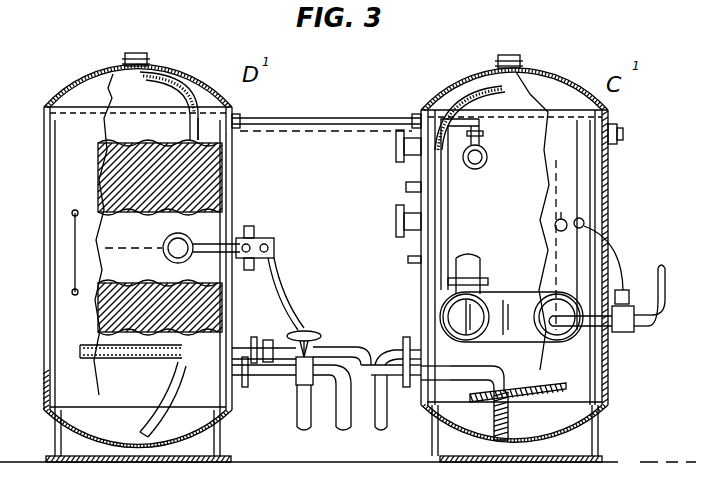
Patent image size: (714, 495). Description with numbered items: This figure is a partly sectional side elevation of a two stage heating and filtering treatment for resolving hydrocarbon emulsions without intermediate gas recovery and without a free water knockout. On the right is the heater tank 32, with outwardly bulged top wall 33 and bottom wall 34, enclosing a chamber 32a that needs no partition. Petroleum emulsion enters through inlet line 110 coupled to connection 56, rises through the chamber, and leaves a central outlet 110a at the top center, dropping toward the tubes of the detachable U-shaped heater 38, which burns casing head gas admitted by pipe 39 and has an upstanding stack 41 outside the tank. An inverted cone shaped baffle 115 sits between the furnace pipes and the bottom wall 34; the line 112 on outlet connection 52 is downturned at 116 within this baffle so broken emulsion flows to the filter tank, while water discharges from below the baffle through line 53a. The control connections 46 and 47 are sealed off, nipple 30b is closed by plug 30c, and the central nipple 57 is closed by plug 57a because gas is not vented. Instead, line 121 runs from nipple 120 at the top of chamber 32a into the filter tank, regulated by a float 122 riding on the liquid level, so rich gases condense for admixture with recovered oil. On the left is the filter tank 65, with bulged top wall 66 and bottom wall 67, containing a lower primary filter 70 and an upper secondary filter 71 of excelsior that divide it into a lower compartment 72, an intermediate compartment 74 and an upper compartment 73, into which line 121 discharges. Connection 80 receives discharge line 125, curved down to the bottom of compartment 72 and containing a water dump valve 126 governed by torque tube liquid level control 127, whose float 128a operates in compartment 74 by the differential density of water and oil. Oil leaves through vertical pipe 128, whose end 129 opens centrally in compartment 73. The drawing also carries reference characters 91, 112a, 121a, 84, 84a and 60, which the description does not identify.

The top wall 66 is at (108, 80).
The vent nozzle 91 is at (127, 58).
The upper compartment 73 is at (135, 112).
The end of discharge pipe 129 is at (160, 90).
The vertical pipe 128 is at (192, 124).
The upper secondary filter 71 is at (98, 163).
The lower primary filter 70 is at (97, 312).
The tank 65 is at (46, 235).
The intermediate compartment 74 is at (122, 236).
The float 128a is at (162, 254).
The overflow pipe 112a is at (130, 360).
The lower compartment 72 is at (50, 415).
The bottom wall 67 is at (88, 445).
The line 121 is at (312, 118).
The pipe flange 121a is at (238, 116).
The nipple 120 is at (415, 114).
The torque tube liquid level control 127 is at (276, 244).
The valve body 84 is at (247, 238).
The pipe flange 84a is at (246, 347).
The discharge line 125 is at (286, 382).
The connection 80 is at (262, 384).
The water dump valve 126 is at (332, 397).
The line 112 is at (328, 347).
The inlet line 110 is at (392, 350).
The connection 56 is at (407, 337).
The outlet connection 52 is at (421, 382).
The top wall 33 is at (556, 88).
The central nipple 57 is at (522, 66).
The plug 57a is at (516, 56).
The central outlet 110a is at (480, 118).
The float 122 is at (488, 158).
The nipple 30b is at (619, 130).
The plug 30c is at (624, 136).
The tubular flanged control connection 46 is at (396, 148).
The fitting 60 is at (406, 187).
The tubular flanged control connection 47 is at (396, 222).
The chamber 32a is at (408, 259).
The tank 32 is at (588, 212).
The upstanding stack 41 is at (476, 256).
The U-shaped heater 38 is at (498, 306).
The pipe 39 is at (650, 328).
The downturned portion 116 is at (520, 376).
The inverted cone shaped baffle 115 is at (544, 396).
The line 53a is at (493, 416).
The bottom wall 34 is at (560, 462).